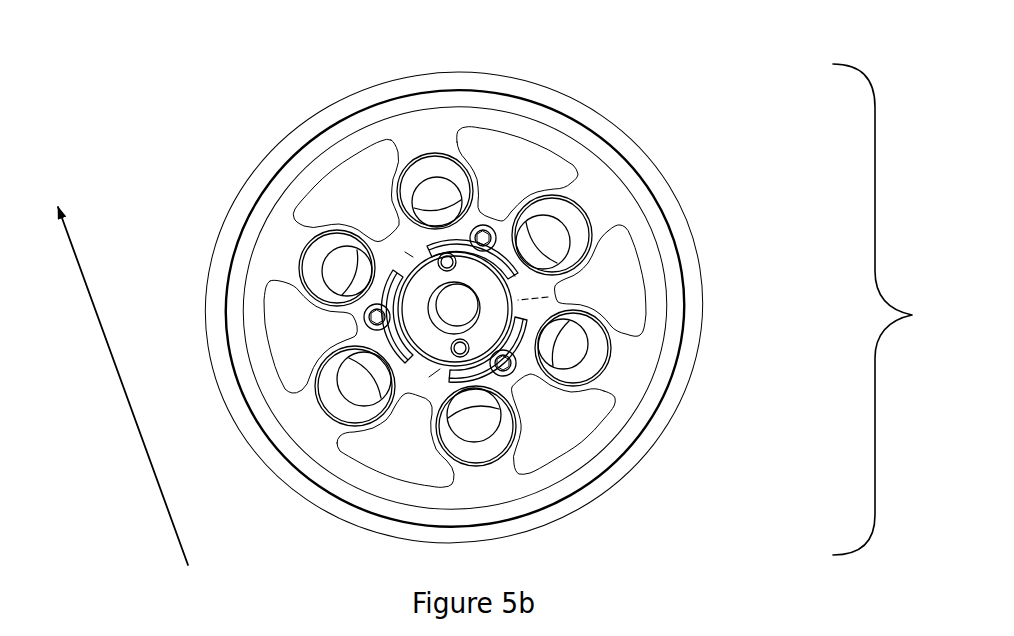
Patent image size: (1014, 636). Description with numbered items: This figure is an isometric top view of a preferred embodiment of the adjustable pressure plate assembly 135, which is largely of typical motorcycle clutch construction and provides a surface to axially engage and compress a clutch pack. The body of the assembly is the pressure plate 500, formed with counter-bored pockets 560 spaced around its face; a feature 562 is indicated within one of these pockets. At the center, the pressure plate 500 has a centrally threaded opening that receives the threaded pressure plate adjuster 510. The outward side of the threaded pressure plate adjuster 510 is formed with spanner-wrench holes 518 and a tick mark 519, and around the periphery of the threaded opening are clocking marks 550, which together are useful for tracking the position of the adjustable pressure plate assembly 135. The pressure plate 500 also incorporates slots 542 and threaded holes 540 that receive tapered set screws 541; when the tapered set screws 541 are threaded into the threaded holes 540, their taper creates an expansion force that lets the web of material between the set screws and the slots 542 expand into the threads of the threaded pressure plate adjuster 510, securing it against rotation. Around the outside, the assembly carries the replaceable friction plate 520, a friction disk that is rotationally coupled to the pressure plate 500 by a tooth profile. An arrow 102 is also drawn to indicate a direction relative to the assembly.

The pressure plate 500 is at (503, 165).
The threaded pressure plate adjuster 510 is at (420, 285).
The spanner-wrench holes 518 is at (448, 352).
The tick mark 519 is at (417, 312).
The replaceable friction plate 520 is at (227, 243).
The threaded holes 540 is at (513, 374).
The tapered set screws 541 is at (500, 373).
The slots 542 is at (524, 342).
The clocking marks 550 is at (552, 297).
The counter-bored pockets 560 is at (543, 215).
The counterbore 562 is at (578, 243).
The direction arrow 102 is at (123, 386).
The adjustable pressure plate assembly 135 is at (882, 309).